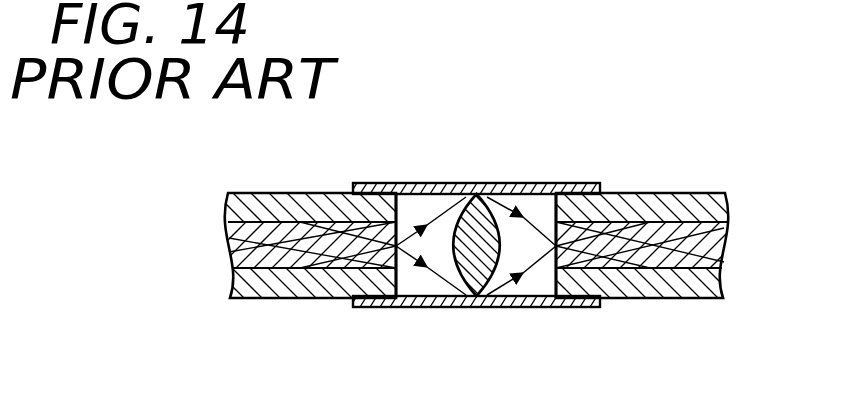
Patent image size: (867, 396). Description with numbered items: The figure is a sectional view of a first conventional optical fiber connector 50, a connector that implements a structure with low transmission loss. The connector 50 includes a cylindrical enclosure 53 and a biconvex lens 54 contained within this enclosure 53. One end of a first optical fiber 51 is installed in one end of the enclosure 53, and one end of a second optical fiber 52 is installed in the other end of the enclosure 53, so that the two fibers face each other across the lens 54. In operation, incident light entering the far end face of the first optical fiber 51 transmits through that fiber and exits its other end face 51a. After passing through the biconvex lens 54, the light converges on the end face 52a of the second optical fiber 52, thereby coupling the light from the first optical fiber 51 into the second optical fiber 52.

The first conventional optical fiber connector 50 is at (546, 160).
The first optical fiber 51 is at (292, 240).
The other end face of the first optical fiber 51a is at (393, 272).
The second optical fiber 52 is at (683, 227).
The end face of the second optical fiber 52a is at (556, 283).
The cylindrical enclosure 53 is at (417, 183).
The biconvex lens 54 is at (479, 285).